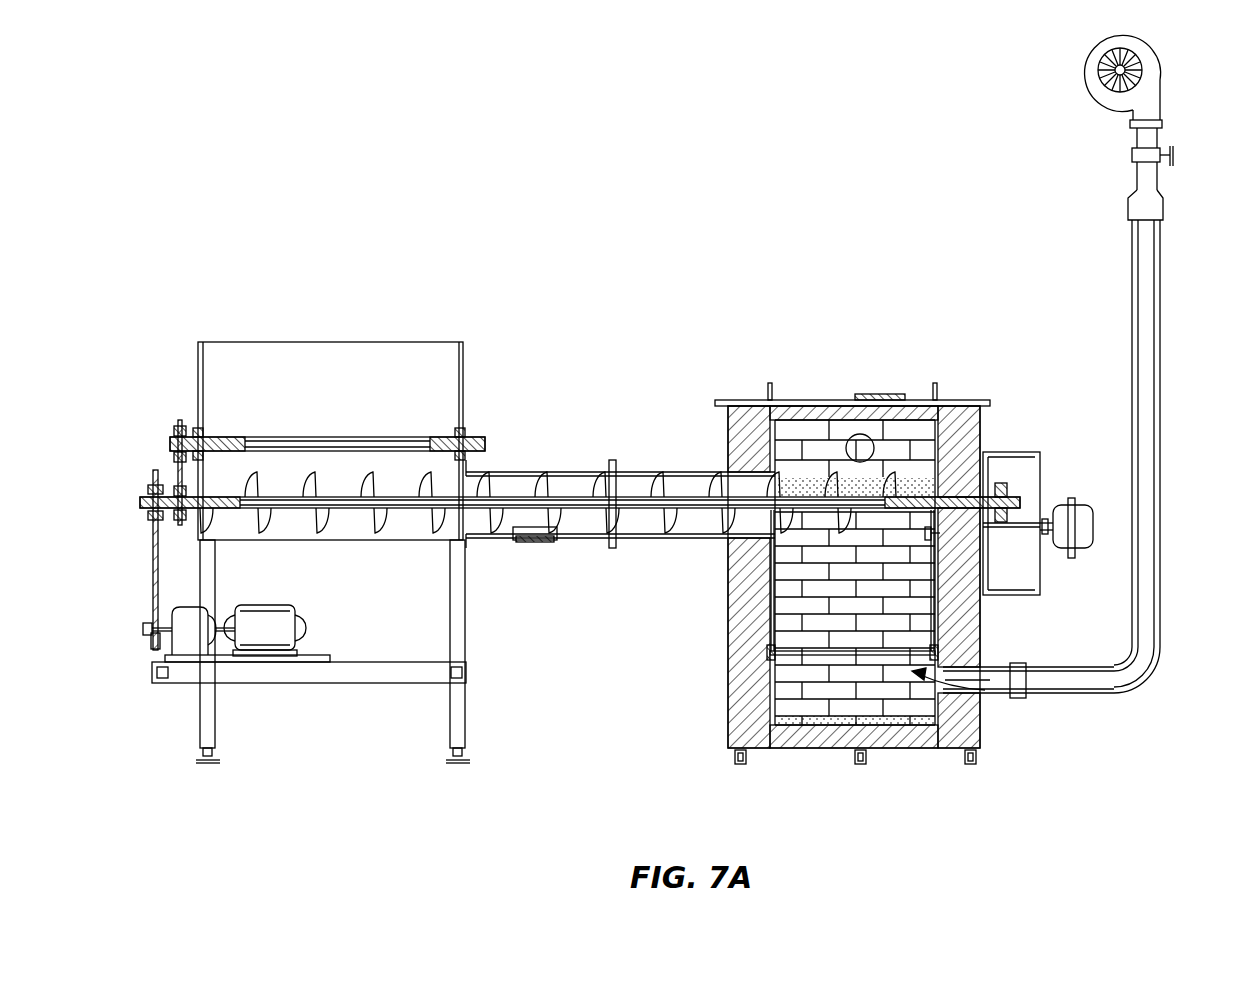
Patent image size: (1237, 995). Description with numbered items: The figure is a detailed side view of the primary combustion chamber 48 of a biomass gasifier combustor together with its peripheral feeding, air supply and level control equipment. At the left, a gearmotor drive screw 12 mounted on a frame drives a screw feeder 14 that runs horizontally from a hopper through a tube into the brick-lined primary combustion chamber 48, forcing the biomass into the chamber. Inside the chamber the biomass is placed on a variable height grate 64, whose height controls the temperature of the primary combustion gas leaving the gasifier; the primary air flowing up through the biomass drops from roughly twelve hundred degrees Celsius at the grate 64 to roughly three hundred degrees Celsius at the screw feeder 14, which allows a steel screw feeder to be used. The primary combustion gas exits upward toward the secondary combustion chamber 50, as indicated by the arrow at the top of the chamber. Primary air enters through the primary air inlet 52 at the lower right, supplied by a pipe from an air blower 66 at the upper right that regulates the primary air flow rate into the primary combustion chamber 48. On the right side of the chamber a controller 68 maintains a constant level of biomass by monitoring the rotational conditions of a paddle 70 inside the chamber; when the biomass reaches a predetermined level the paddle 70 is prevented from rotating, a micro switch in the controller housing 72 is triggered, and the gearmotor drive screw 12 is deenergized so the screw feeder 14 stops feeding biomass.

The gearmotor drive screw 12 is at (300, 618).
The screw feeder 14 is at (345, 520).
The primary combustion chamber 48 is at (745, 650).
The secondary combustion chamber 50 is at (861, 400).
The primary air inlet 52 is at (975, 692).
The variable height grate 64 is at (793, 653).
The air blower 66 is at (1138, 52).
The controller 68 is at (1008, 452).
The paddle 70 is at (925, 534).
The controller housing 72 is at (1058, 505).